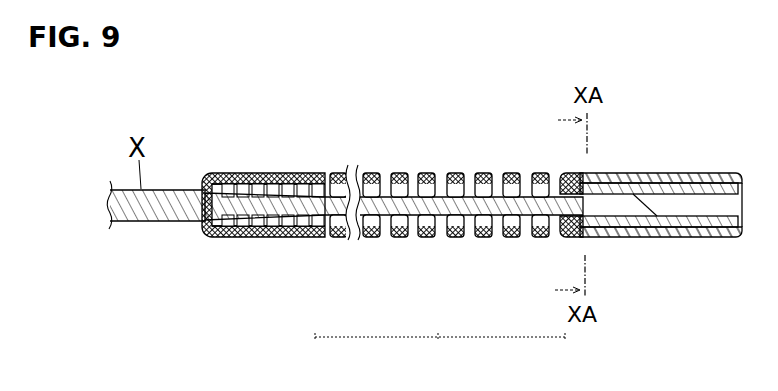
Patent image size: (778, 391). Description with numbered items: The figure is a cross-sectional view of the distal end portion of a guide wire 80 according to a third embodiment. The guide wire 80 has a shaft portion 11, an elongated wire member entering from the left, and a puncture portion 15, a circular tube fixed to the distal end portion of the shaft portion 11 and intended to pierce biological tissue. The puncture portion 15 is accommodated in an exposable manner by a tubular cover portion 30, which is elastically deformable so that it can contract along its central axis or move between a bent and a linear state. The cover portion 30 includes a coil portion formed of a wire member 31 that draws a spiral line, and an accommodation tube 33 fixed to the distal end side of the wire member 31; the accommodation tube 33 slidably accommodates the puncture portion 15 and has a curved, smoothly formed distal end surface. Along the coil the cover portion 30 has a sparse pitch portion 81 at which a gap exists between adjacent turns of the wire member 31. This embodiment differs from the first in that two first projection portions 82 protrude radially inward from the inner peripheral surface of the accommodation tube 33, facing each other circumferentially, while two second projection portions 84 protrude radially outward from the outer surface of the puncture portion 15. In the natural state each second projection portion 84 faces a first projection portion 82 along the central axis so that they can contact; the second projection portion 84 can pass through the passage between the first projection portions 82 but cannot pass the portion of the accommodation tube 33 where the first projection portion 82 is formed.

The shaft portion 11 is at (190, 190).
The puncture portion 15 is at (632, 237).
The cover portion 30 is at (312, 173).
The wire member 31 is at (421, 237).
The accommodation tube 33 is at (702, 173).
The guide wire 80 is at (236, 152).
The sparse pitch portion 81 is at (440, 354).
The first projection portion 82 is at (658, 173).
The second projection portion 84 is at (565, 173).